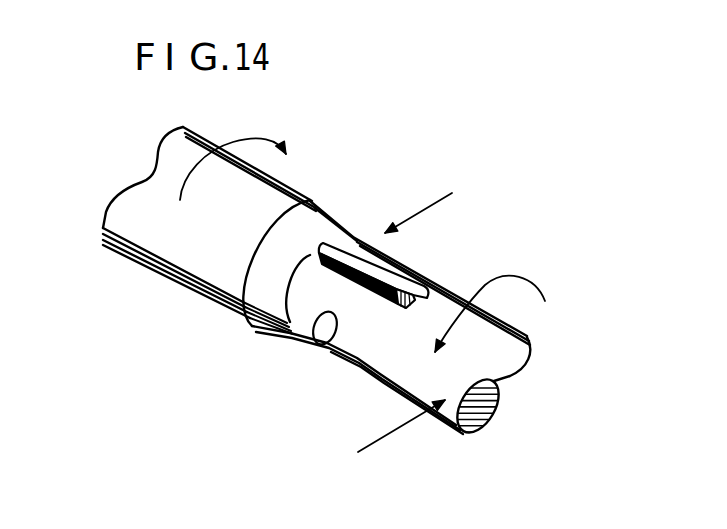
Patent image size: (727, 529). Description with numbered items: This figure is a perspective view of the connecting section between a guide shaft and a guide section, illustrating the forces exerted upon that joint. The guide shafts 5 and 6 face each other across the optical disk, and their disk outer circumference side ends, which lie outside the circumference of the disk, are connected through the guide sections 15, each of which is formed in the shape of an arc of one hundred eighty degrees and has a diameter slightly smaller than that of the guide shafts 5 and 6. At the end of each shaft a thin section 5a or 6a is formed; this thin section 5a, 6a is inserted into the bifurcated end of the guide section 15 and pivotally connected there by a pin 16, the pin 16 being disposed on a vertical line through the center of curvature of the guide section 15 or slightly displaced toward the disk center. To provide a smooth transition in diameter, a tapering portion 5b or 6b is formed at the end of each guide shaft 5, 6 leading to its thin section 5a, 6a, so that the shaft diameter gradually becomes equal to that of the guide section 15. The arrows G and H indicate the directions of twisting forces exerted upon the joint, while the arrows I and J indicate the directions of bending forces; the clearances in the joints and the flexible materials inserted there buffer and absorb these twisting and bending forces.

The guide shaft 6 is at (207, 244).
The guide shaft 5 is at (195, 283).
The thin section 6a is at (446, 267).
The thin section 5a is at (421, 274).
The tapering portion 6b is at (227, 352).
The tapering portion 5b is at (268, 326).
The pin 16 is at (320, 345).
The guide section 15 is at (499, 366).
The arrow G is at (223, 187).
The arrow H is at (499, 314).
The arrow I is at (354, 462).
The arrow J is at (428, 202).